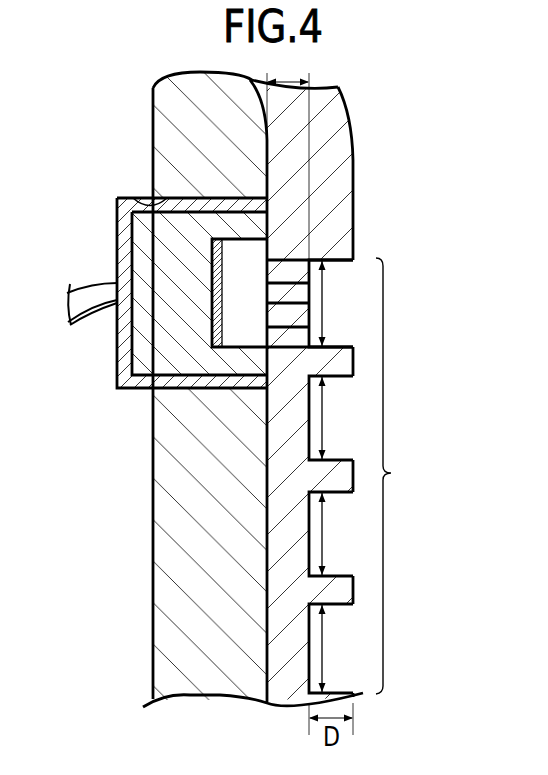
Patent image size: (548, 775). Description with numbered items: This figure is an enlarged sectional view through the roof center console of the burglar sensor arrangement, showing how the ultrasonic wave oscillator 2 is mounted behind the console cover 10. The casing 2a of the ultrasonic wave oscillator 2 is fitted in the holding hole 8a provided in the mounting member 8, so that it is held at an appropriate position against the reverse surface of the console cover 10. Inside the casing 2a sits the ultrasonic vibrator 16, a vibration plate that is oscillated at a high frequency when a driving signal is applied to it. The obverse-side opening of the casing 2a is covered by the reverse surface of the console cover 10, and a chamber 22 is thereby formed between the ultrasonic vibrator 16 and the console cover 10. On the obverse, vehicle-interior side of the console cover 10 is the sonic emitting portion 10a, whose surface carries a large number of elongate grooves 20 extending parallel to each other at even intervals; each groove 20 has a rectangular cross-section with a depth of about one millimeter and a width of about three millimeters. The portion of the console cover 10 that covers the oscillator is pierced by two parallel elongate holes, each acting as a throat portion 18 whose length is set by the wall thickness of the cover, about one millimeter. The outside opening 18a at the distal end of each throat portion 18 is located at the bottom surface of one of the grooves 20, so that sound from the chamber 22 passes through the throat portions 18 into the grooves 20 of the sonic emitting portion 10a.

The ultrasonic wave oscillator 2 is at (183, 192).
The casing 2a is at (123, 228).
The mounting member 8 is at (170, 114).
The holding hole 8a is at (137, 198).
The console cover 10 is at (337, 123).
The sonic emitting portion 10a is at (408, 476).
The ultrasonic vibrator 16 is at (217, 305).
The throat portion 18 is at (296, 262).
The outside opening 18a is at (296, 306).
The grooves 20 is at (346, 296).
The chamber 22 is at (243, 352).